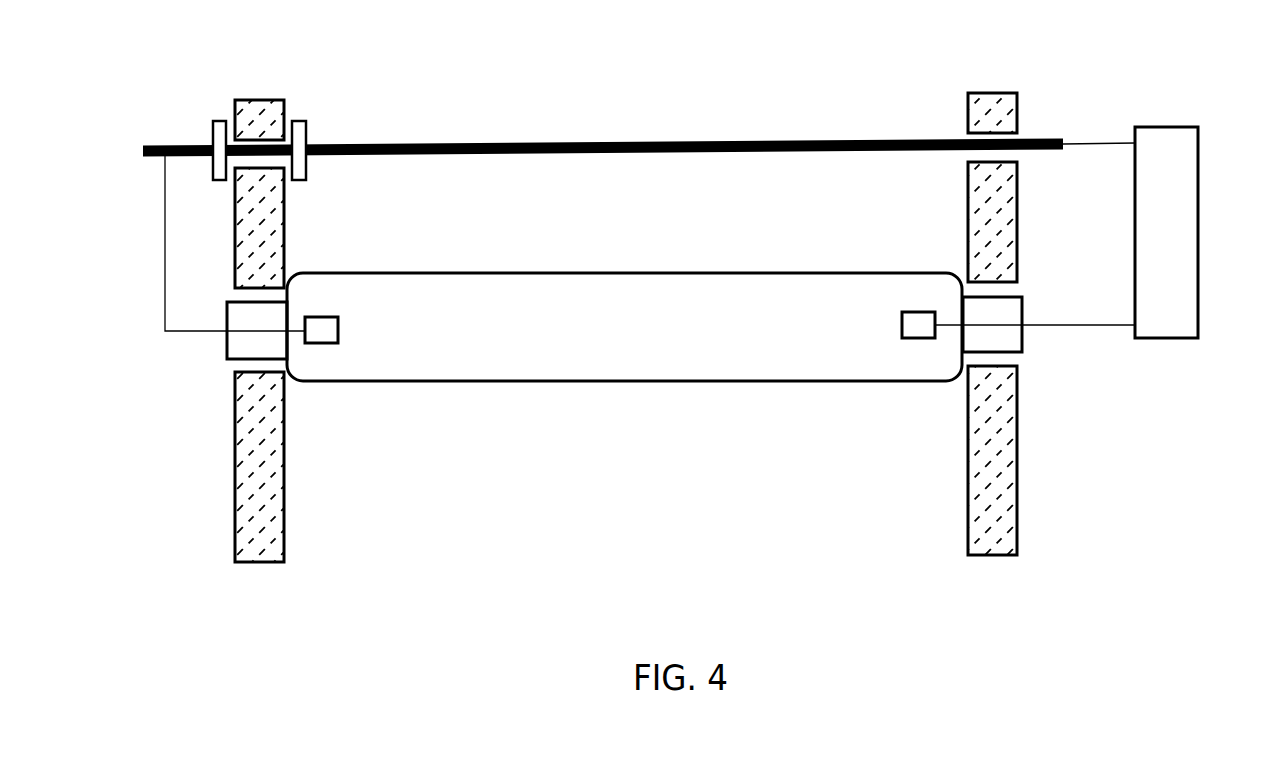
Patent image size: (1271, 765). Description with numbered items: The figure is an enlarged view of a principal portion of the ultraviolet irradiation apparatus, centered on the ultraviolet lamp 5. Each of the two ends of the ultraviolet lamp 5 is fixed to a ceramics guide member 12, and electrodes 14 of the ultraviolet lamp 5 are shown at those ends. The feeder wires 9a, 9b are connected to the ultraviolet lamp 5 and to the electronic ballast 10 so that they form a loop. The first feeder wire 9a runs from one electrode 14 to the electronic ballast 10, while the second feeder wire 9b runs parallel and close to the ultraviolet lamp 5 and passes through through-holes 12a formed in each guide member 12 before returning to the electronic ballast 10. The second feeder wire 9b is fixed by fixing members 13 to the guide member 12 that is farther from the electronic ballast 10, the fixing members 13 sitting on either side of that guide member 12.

The ultraviolet lamp 5 is at (648, 382).
The feeder wire 9a is at (1073, 327).
The second feeder wire 9b is at (628, 142).
The electronic ballast 10 is at (1168, 340).
The guide member 12 is at (284, 518).
The through-hole 12a is at (268, 166).
The fixing member 13 is at (219, 121).
The electrode 14 is at (325, 345).